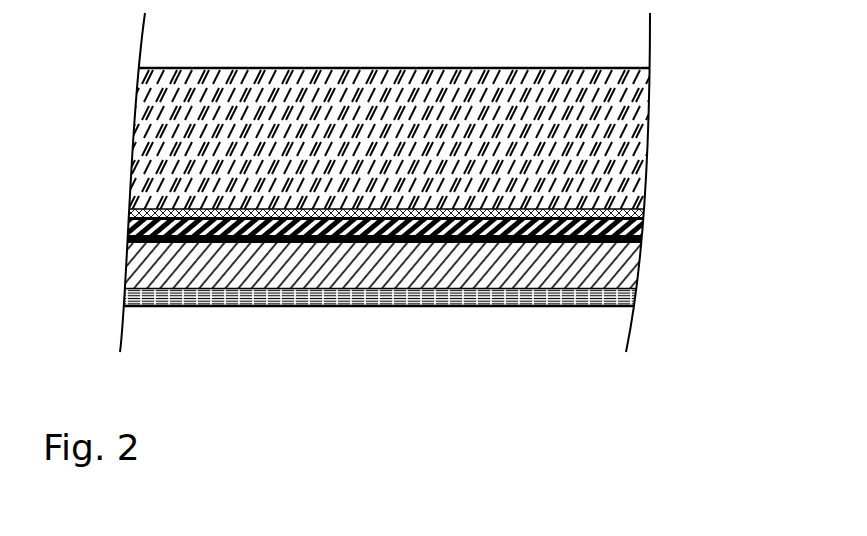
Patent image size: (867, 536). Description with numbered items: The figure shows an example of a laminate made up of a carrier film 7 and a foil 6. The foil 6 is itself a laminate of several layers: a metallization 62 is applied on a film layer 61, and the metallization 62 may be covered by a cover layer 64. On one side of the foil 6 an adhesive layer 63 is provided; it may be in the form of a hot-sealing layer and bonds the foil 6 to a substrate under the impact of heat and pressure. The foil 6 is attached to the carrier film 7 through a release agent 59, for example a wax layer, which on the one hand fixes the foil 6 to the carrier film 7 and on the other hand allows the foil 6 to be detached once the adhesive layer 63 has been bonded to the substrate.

The carrier film 7 is at (605, 137).
The release agent 59 is at (648, 212).
The foil 6 is at (378, 268).
The cover layer 64 is at (127, 222).
The metallization 62 is at (127, 241).
The film layer 61 is at (130, 268).
The adhesive layer 63 is at (128, 300).